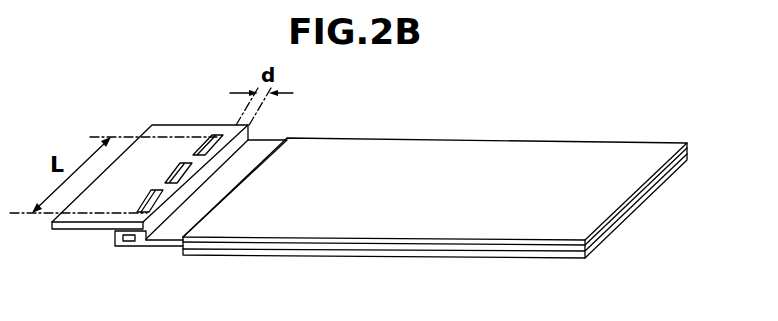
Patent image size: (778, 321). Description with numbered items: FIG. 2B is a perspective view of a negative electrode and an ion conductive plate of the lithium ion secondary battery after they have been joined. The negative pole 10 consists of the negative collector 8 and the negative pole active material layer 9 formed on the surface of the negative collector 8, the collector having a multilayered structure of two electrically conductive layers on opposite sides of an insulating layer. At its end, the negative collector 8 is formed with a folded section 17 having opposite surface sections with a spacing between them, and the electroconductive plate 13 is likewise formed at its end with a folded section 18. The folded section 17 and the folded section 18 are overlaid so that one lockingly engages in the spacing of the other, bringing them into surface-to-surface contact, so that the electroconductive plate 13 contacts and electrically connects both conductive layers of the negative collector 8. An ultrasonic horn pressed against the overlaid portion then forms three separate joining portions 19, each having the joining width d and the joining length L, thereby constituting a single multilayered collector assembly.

The negative collector 8 is at (266, 150).
The negative pole active material layer 9 is at (560, 162).
The negative pole 10 is at (447, 172).
The electroconductive plate 13 is at (142, 164).
The folded section 17 is at (130, 234).
The folded section 18 is at (136, 241).
The joining portions 19 is at (148, 206).